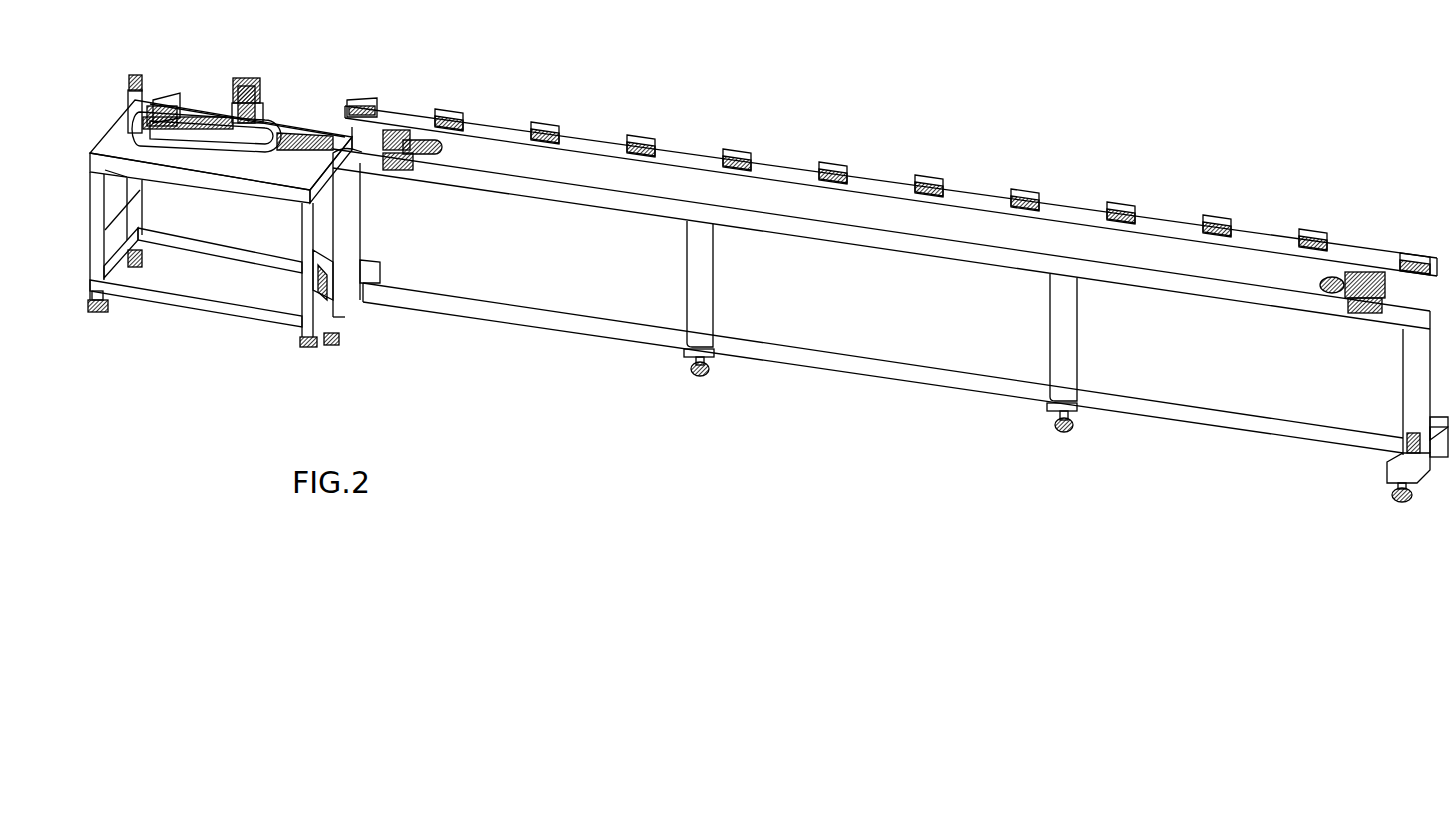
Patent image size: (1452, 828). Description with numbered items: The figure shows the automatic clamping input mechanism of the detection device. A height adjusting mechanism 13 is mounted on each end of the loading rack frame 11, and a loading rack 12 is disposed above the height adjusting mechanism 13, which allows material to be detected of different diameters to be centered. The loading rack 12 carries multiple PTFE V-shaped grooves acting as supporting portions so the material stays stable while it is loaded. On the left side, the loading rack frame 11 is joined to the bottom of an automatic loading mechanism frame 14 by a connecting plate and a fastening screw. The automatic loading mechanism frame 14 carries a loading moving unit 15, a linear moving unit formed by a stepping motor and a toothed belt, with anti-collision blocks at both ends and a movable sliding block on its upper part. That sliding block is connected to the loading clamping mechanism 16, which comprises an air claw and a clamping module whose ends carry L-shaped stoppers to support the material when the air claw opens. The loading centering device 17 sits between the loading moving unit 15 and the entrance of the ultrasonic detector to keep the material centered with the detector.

The loading rack frame 11 is at (1117, 275).
The loading rack 12 is at (682, 160).
The height adjusting mechanism 13 is at (407, 133).
The automatic loading mechanism frame 14 is at (323, 133).
The loading moving unit 15 is at (293, 130).
The loading clamping mechanism 16 is at (247, 90).
The loading centering device 17 is at (183, 62).